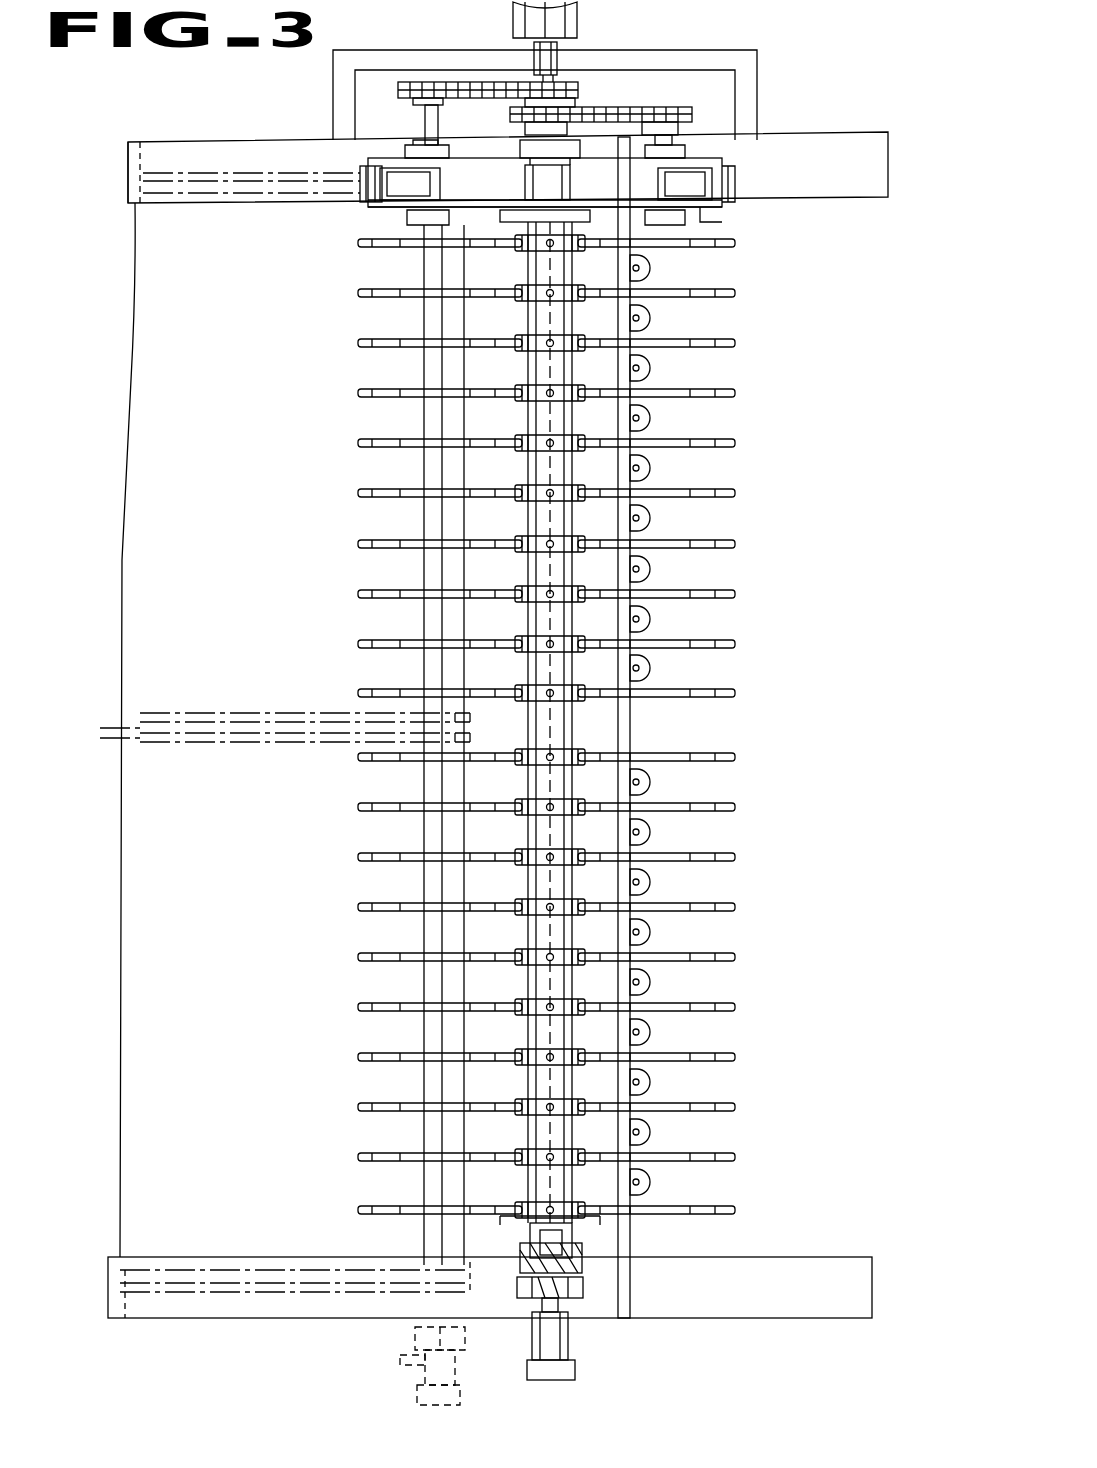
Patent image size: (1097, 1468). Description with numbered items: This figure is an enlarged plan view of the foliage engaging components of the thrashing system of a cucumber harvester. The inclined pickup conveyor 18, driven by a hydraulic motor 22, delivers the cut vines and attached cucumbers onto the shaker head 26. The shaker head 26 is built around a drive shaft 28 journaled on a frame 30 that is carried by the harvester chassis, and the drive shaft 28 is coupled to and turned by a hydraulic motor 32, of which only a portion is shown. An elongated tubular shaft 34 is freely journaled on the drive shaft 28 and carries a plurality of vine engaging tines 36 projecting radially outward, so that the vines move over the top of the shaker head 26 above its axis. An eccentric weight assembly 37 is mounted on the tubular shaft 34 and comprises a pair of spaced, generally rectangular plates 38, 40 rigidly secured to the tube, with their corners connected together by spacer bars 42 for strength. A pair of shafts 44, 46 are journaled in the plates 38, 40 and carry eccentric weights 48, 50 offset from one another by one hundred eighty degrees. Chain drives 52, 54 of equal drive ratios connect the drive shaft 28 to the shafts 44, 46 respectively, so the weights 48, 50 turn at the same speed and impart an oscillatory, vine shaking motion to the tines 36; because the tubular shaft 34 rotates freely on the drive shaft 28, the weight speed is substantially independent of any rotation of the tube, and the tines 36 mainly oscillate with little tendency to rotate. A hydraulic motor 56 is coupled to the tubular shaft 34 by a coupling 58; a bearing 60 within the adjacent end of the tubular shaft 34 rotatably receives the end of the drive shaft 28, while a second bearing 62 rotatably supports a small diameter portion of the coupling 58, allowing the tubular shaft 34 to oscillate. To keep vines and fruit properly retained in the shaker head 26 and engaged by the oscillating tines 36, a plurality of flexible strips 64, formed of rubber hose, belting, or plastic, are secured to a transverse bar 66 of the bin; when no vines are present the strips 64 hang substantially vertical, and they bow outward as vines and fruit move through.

The inclined pickup conveyor 18 is at (127, 272).
The hydraulic motor 22 is at (420, 1382).
The shaker head 26 is at (766, 540).
The drive shaft 28 is at (540, 80).
The frame 30 is at (338, 137).
The hydraulic motor 32 is at (515, 24).
The tubular shaft 34 is at (530, 468).
The vine engaging tines 36 is at (355, 348).
The eccentric weight assembly 37 is at (712, 150).
The rectangular plate 38 is at (720, 165).
The rectangular plate 40 is at (708, 212).
The spacer bars 42 is at (713, 200).
The shaft 44 is at (425, 122).
The shaft 46 is at (665, 132).
The eccentric weight 48 is at (388, 194).
The eccentric weight 50 is at (693, 183).
The chain drive 52 is at (455, 82).
The chain drive 54 is at (640, 122).
The hydraulic motor 56 is at (568, 1340).
The coupling 58 is at (582, 1262).
The bearing 60 is at (572, 1240).
The bearing 62 is at (583, 1290).
The flexible strips 64 is at (645, 368).
The transverse bar 66 is at (628, 728).